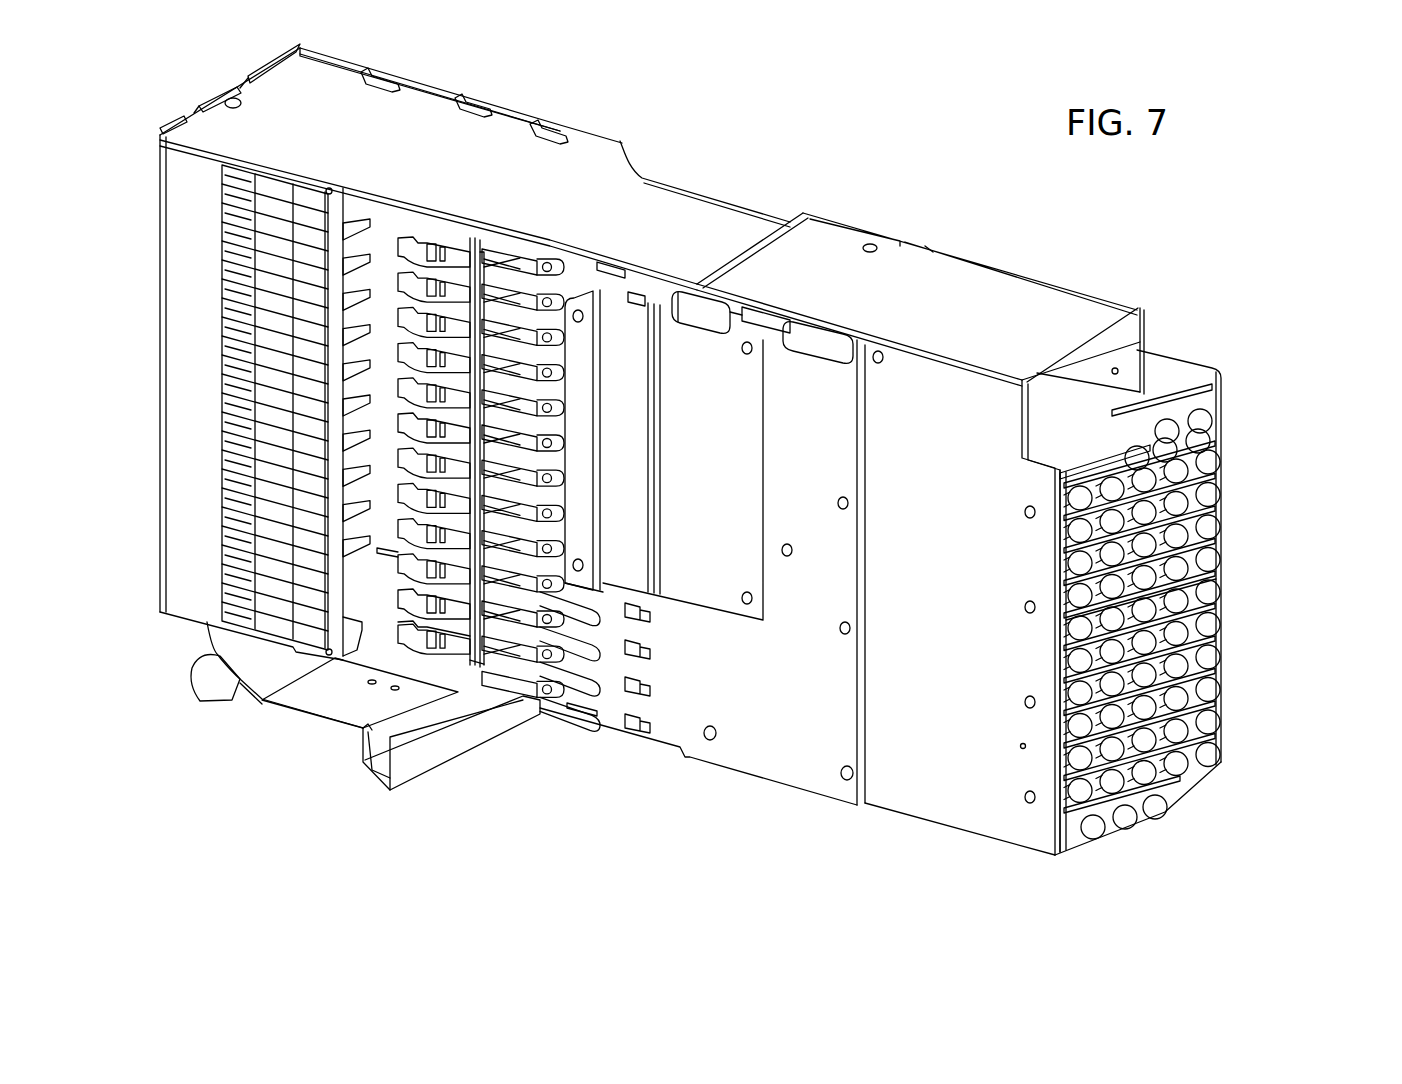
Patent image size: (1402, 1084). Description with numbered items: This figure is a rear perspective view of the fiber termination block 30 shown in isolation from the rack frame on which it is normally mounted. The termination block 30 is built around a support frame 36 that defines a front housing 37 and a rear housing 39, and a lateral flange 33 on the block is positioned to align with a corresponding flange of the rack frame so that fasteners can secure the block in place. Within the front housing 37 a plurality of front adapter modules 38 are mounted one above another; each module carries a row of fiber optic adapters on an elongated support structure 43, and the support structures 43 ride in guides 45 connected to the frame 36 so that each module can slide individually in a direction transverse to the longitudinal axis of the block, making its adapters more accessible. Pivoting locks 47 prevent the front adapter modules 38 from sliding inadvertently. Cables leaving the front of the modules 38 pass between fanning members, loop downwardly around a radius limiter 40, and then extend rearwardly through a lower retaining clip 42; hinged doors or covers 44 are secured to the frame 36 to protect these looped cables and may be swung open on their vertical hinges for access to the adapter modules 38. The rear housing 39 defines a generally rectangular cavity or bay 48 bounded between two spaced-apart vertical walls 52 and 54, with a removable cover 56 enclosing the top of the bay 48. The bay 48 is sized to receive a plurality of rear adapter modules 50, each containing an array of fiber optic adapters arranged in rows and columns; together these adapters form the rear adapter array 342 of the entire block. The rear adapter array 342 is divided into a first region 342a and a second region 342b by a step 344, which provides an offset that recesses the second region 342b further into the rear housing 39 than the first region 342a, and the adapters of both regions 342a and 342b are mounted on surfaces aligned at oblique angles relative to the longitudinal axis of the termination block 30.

The fiber termination block 30 is at (762, 145).
The lateral flange 33 is at (582, 485).
The support frame 36 is at (790, 197).
The front housing 37 is at (489, 105).
The front adapter modules 38 is at (459, 678).
The rear housing 39 is at (1003, 268).
The radius limiter 40 is at (207, 635).
The lower retaining clip 42 is at (375, 776).
The elongated support structure 43 is at (482, 652).
The hinged doors or covers 44 is at (296, 58).
The guides 45 is at (479, 680).
The pivoting locks 47 is at (403, 640).
The bay 48 is at (1057, 820).
The rear adapter modules 50 is at (1210, 478).
The vertical wall 52 is at (970, 813).
The vertical wall 54 is at (1219, 635).
The removable cover 56 is at (1100, 333).
The rear adapter array 342 is at (1240, 790).
The first region 342a is at (1094, 447).
The second region 342b is at (1176, 379).
The step 344 is at (1145, 427).